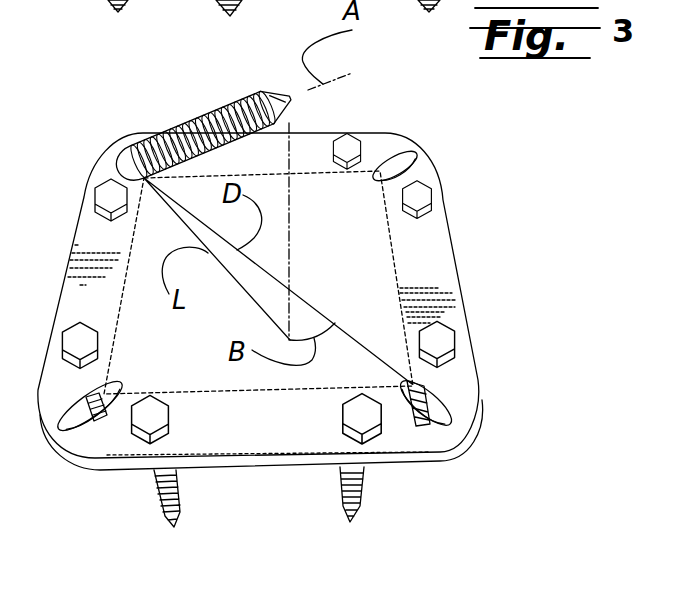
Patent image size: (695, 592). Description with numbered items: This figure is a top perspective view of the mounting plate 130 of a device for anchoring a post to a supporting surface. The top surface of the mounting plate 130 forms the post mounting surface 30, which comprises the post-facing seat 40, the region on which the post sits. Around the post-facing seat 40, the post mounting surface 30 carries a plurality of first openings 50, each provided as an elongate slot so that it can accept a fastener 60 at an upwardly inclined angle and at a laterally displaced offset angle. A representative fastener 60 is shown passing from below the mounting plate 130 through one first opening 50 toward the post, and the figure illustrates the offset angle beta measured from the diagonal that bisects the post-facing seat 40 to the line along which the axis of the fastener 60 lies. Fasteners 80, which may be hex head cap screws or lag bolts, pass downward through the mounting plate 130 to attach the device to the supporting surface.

The post mounting surface 30 is at (445, 290).
The post-facing seat 40 is at (386, 250).
The first opening 50 is at (397, 160).
The fastener 60 is at (201, 115).
The fastener 80 is at (367, 478).
The mounting plate 130 is at (450, 453).